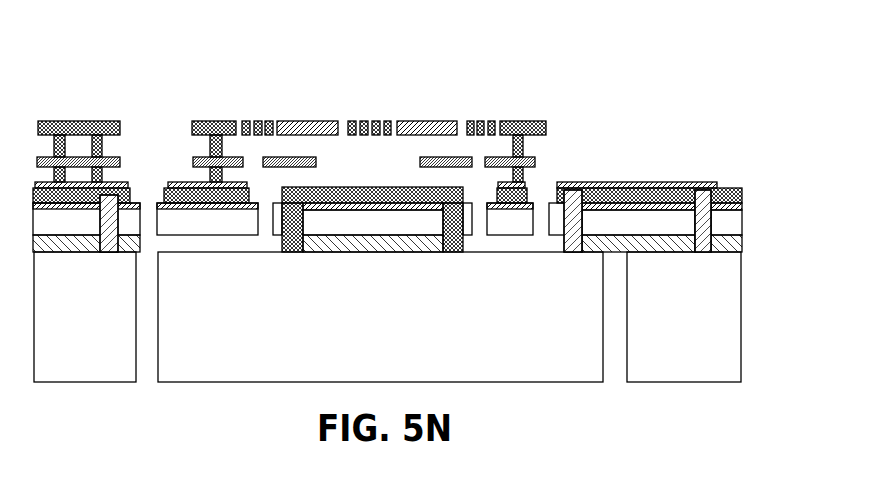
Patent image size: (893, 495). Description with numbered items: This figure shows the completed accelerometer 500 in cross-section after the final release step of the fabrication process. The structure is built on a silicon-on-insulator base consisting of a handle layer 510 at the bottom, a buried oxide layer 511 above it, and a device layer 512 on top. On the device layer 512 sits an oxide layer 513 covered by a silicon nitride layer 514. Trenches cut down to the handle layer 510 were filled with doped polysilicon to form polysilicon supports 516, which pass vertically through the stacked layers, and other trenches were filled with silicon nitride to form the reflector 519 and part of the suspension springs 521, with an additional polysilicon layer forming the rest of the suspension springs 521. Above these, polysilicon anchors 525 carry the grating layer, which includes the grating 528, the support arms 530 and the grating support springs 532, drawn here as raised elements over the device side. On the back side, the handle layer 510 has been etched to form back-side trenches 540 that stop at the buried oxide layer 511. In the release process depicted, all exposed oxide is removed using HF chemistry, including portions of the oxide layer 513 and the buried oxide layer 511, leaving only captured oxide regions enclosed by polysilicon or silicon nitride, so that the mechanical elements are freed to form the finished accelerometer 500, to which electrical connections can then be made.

The accelerometer 500 is at (680, 89).
The handle layer 510 is at (737, 333).
The buried oxide layer 511 is at (740, 242).
The device layer 512 is at (738, 218).
The oxide layer 513 is at (742, 200).
The silicon nitride layer 514 is at (728, 188).
The polysilicon supports 516 is at (568, 190).
The reflector 519 is at (362, 187).
The suspension springs 521 is at (663, 182).
The anchors 525 is at (537, 162).
The grating 528 is at (365, 121).
The support arms 530 is at (533, 121).
The grating support springs 532 is at (260, 121).
The back-side trenches 540 is at (146, 374).